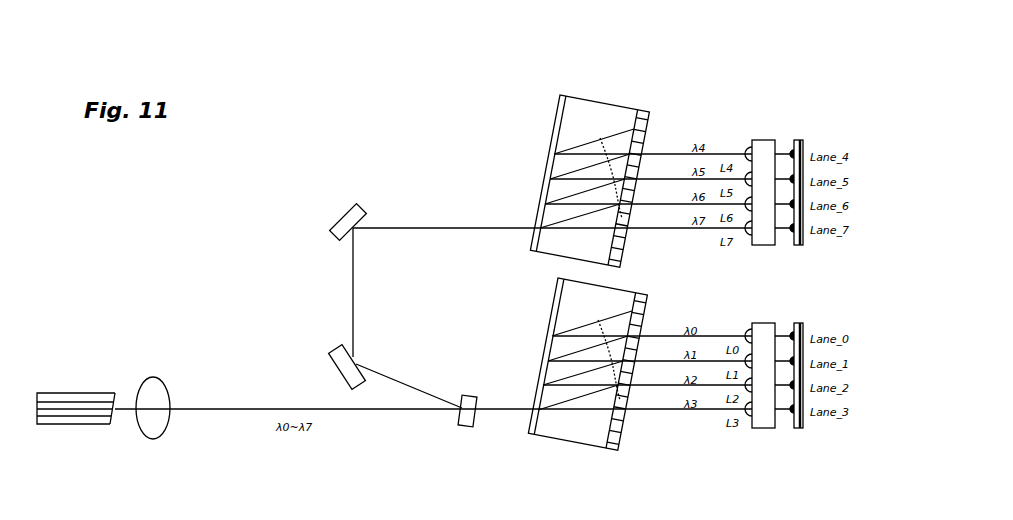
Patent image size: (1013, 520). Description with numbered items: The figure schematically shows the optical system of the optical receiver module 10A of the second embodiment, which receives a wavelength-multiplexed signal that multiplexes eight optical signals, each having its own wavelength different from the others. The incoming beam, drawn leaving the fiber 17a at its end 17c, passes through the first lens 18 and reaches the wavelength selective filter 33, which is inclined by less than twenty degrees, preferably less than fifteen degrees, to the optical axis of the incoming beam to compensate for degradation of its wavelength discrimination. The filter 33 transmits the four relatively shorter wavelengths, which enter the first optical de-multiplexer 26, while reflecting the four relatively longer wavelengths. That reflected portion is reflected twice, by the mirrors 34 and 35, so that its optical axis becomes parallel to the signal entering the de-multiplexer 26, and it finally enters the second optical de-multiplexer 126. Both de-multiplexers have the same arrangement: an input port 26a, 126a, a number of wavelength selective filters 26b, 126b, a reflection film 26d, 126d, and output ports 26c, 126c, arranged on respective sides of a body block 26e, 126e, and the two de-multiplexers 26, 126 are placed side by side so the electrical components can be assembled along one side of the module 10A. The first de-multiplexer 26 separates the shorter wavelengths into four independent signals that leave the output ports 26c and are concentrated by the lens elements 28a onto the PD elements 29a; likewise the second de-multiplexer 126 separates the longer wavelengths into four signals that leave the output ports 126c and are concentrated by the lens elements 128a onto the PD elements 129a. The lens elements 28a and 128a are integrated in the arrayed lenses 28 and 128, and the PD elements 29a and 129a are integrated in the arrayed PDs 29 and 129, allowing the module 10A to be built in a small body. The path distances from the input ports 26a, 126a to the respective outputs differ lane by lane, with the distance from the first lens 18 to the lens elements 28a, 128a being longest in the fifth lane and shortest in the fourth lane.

The optical receiver module 10A is at (358, 127).
The optical fiber 17a is at (86, 392).
The fiber end face 17c is at (110, 425).
The first lens 18 is at (153, 377).
The wavelength selective filter 33 is at (468, 395).
The mirror 34 is at (332, 352).
The mirror 35 is at (342, 213).
The first optical de-multiplexer 26 is at (553, 308).
The input port 26a is at (531, 413).
The wavelength selective filters 26b is at (620, 396).
The output ports 26c is at (637, 330).
The reflection film 26d is at (548, 339).
The body block 26e is at (560, 430).
The arrayed lens 28 is at (766, 323).
The lens elements 28a is at (751, 329).
The arrayed PD 29 is at (803, 426).
The PD elements 29a is at (798, 323).
The second optical de-multiplexer 126 is at (606, 103).
The input port 126a is at (532, 226).
The wavelength selective filters 126b is at (622, 214).
The output ports 126c is at (639, 148).
The reflection film 126d is at (548, 159).
The body block 126e is at (572, 246).
The arrayed lens 128 is at (766, 140).
The lens elements 128a is at (751, 146).
The arrayed PD 129 is at (803, 245).
The PD elements 129a is at (798, 140).